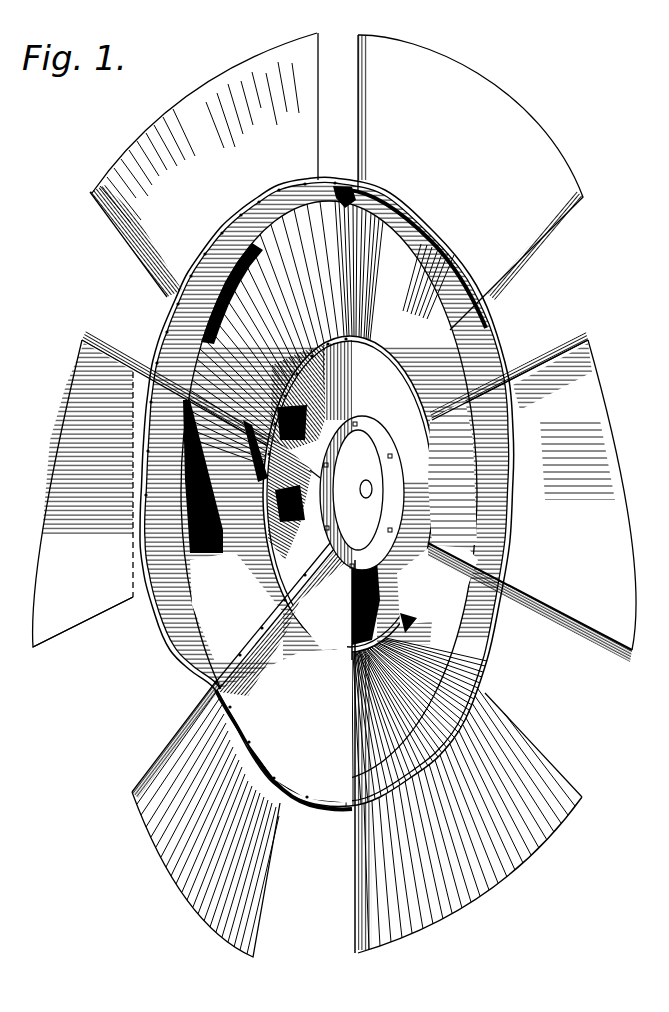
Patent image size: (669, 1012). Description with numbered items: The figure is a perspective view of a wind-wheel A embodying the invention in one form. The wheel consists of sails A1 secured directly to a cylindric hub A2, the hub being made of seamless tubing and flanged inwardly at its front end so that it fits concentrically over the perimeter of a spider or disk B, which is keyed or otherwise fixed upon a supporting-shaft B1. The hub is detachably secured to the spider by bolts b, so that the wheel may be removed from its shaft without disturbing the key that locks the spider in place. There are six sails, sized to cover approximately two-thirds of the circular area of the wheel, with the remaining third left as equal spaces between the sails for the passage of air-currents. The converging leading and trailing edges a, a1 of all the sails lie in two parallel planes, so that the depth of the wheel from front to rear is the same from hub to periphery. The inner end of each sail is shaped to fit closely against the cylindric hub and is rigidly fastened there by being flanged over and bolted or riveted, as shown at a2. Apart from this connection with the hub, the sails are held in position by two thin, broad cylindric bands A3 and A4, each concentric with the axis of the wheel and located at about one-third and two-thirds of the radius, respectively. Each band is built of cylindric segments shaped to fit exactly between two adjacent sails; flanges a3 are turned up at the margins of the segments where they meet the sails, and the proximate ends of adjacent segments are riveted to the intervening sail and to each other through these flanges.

The leading edge a is at (322, 96).
The trailing edge a1 is at (356, 38).
The flanged inner end of sail a2 is at (586, 350).
The flanges a3 is at (226, 221).
The wind-wheel A is at (194, 623).
The sails A1 is at (96, 600).
The hub A2 is at (336, 582).
The inner cylindric band A3 is at (430, 498).
The outer cylindric band A4 is at (492, 345).
The spider or disk B is at (370, 540).
The supporting-shaft B1 is at (364, 480).
The bolts b is at (358, 424).